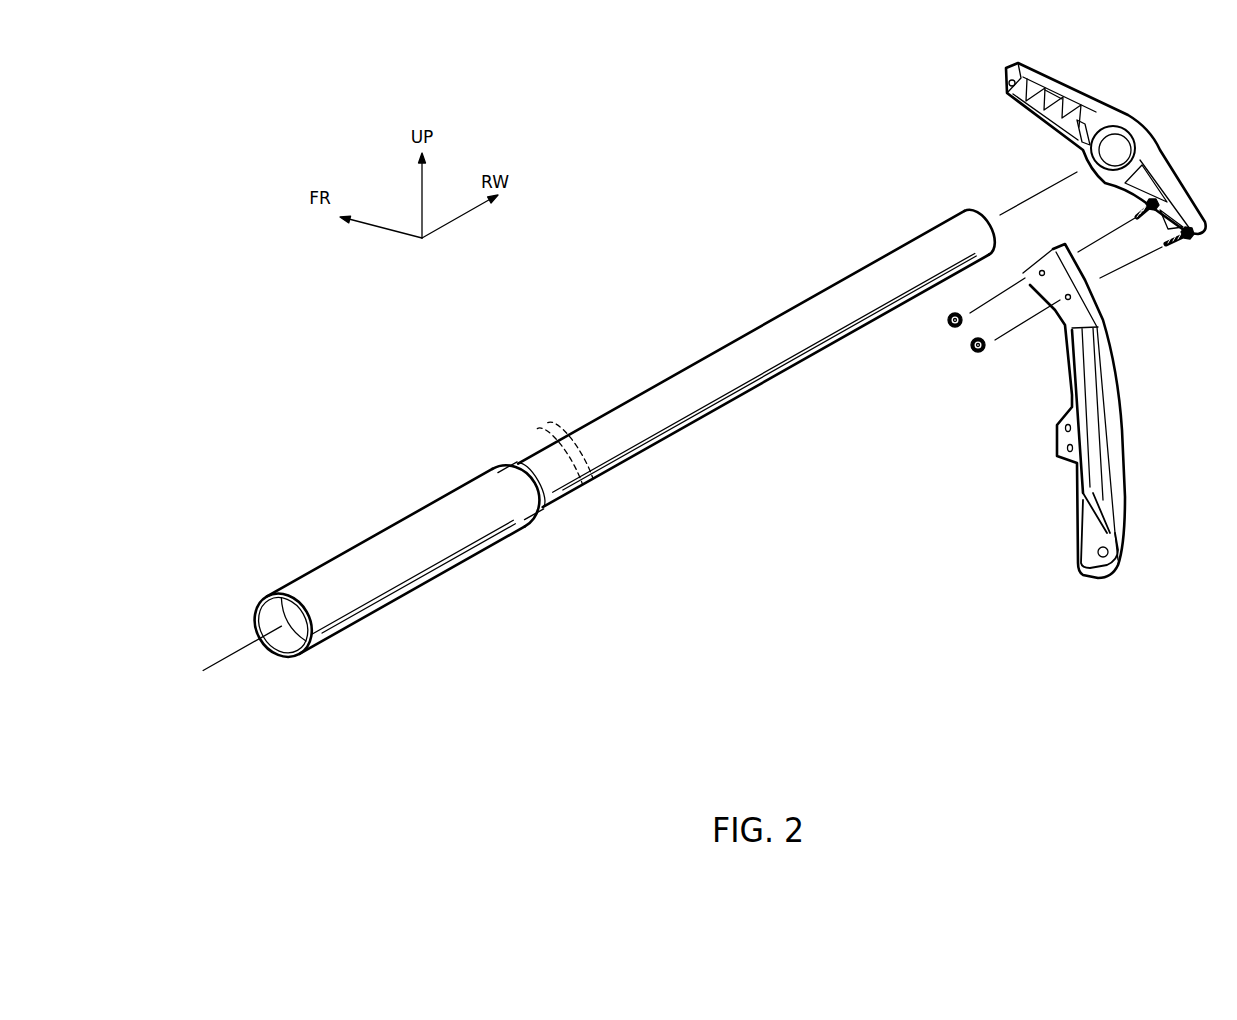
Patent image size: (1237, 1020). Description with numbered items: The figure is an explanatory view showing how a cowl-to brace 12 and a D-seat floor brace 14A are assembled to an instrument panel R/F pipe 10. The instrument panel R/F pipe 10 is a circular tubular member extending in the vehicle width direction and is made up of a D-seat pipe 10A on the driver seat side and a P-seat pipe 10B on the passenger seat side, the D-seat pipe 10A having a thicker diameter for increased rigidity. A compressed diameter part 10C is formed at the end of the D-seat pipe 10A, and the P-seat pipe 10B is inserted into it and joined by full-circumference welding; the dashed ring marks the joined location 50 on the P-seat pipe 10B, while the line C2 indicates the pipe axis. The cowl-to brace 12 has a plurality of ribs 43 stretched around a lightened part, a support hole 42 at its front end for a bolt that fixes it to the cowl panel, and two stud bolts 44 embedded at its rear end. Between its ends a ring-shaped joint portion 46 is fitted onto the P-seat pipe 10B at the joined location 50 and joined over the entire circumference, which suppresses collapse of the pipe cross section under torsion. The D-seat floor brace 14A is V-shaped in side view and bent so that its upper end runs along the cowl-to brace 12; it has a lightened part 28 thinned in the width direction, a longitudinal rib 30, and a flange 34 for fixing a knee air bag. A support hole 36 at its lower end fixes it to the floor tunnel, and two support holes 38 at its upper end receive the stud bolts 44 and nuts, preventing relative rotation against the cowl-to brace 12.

The instrument panel R/F pipe 10 is at (602, 465).
The D-seat pipe 10A is at (374, 542).
The P-seat pipe 10B is at (633, 408).
The compressed diameter part 10C is at (513, 473).
The joined location 50 is at (540, 425).
The tube axis C2 is at (220, 665).
The cowl-to brace 12 is at (1075, 154).
The support hole 42 is at (1003, 88).
The ribs 43 is at (1067, 125).
The stud bolts 44 is at (1135, 214).
The joint portion 46 is at (1092, 147).
The D-seat floor brace 14A is at (1105, 420).
The lightened part 28 is at (1102, 378).
The rib 30 is at (1083, 379).
The flange 34 is at (1058, 440).
The support hole 36 is at (1112, 572).
The support holes 38 is at (1040, 270).